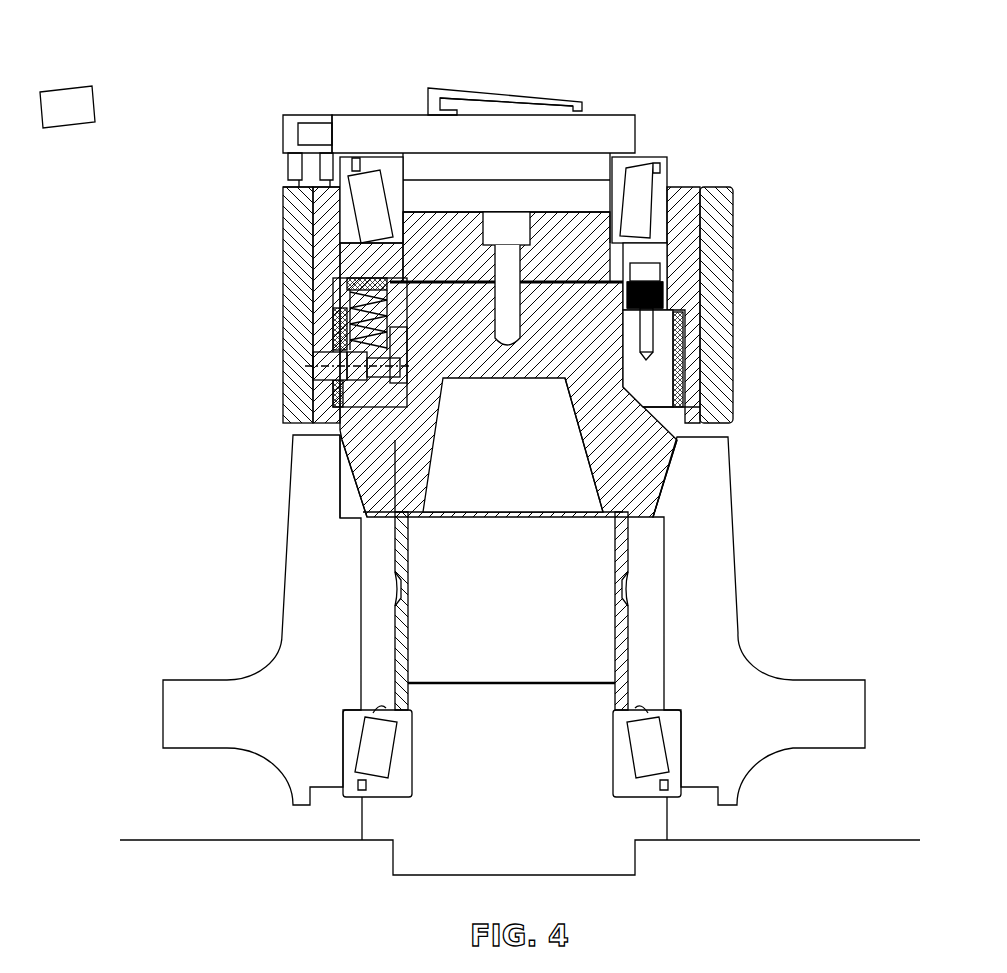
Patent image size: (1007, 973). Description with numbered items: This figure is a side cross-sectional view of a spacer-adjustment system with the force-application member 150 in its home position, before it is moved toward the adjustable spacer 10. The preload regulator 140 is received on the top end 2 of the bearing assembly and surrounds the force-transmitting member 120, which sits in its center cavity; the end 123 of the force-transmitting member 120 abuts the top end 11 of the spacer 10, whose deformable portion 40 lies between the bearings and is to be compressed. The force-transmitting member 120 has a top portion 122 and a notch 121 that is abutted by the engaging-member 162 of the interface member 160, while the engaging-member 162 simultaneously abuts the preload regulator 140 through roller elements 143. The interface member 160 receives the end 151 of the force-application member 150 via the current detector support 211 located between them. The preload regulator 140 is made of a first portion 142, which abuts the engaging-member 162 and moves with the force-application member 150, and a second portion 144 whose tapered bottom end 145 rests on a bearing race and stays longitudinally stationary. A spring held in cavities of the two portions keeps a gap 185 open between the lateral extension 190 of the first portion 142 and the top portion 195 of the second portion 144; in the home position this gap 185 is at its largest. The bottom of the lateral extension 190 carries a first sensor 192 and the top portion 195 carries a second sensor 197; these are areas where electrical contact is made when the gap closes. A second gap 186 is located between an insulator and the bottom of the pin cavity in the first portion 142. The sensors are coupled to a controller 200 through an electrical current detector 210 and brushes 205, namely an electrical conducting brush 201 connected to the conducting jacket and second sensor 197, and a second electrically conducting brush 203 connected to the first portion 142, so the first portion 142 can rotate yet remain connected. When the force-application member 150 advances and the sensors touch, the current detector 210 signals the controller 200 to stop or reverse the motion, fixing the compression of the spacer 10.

The top end of bearing assembly 2 is at (724, 513).
The adjustable spacer 10 is at (410, 650).
The top end of spacer 11 is at (398, 516).
The deformable portion 40 is at (405, 600).
The force-transmitting member 120 is at (508, 380).
The notch 121 is at (546, 278).
The top portion 122 is at (506, 247).
The end of force-transmitting member 123 is at (413, 512).
The preload regulator 140 is at (592, 403).
The first portion 142 is at (688, 222).
The roller elements 143 is at (365, 203).
The second portion 144 is at (640, 468).
The bottom end 145 is at (640, 500).
The force-application member 150 is at (455, 108).
The end of force-application member 151 is at (490, 117).
The interface member 160 is at (586, 168).
The engaging-member 162 is at (333, 121).
The gap 185 is at (680, 318).
The second gap 186 is at (705, 410).
The lateral extension 190 is at (660, 312).
The first sensor 192 is at (670, 300).
The top portion of second portion 195 is at (680, 332).
The second sensor 197 is at (685, 320).
The controller 200 is at (293, 133).
The electrical conducting brush 201 is at (288, 175).
The second electrically conducting brush 203 is at (290, 187).
The brushes 205 is at (248, 181).
The electrical current detector 210 is at (327, 132).
The current detector support 211 is at (377, 157).